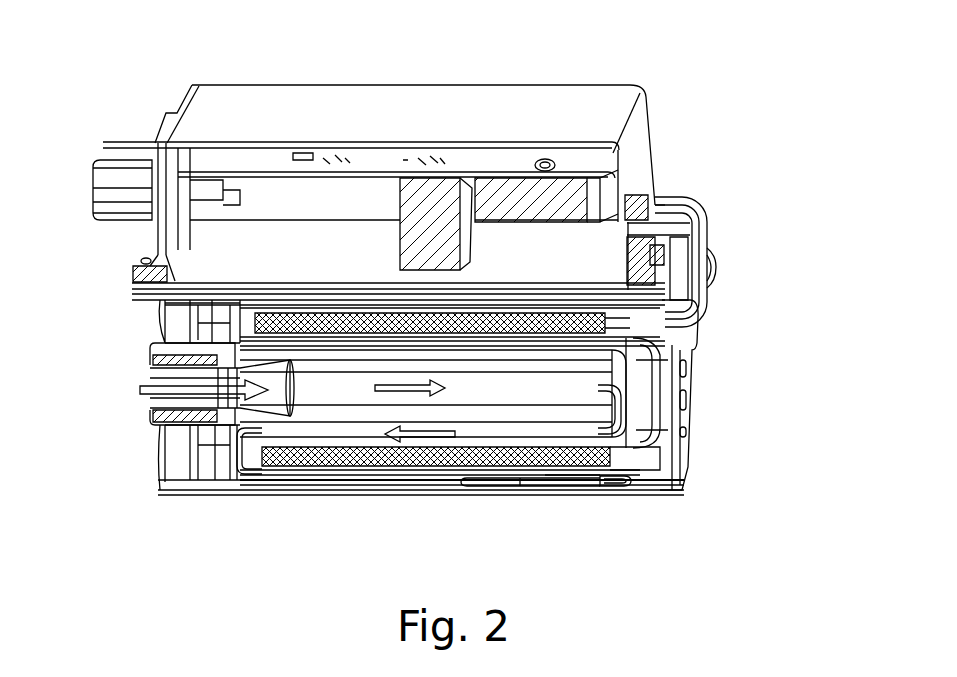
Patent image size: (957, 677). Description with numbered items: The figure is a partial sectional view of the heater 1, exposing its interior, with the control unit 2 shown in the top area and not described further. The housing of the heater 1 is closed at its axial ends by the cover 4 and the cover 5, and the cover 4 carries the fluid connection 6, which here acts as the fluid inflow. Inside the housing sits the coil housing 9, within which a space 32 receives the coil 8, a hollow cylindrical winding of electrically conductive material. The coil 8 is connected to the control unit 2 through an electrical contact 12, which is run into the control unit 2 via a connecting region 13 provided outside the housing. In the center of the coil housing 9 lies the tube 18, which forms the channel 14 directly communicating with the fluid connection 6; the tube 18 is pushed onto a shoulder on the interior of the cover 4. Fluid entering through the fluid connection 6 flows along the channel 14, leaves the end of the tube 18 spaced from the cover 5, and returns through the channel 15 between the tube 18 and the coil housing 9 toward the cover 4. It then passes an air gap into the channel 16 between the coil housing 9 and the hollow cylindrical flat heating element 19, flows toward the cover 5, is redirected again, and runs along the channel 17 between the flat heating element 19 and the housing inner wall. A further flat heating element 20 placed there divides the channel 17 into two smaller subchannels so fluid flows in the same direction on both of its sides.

The heater 1 is at (420, 305).
The control unit 2 is at (390, 116).
The cover 4 is at (160, 455).
The cover 5 is at (690, 378).
The fluid connection 6 is at (152, 405).
The coil 8 is at (510, 497).
The coil housing 9 is at (690, 418).
The electrical contact 12 is at (696, 330).
The connecting region 13 is at (714, 270).
The channel 14 is at (150, 371).
The channel 15 is at (290, 500).
The channel 16 is at (355, 500).
The channel 17 is at (572, 497).
The tube 18 is at (483, 478).
The flat heating element 19 is at (543, 497).
The flat heating element 20 is at (523, 497).
The space 32 is at (606, 497).